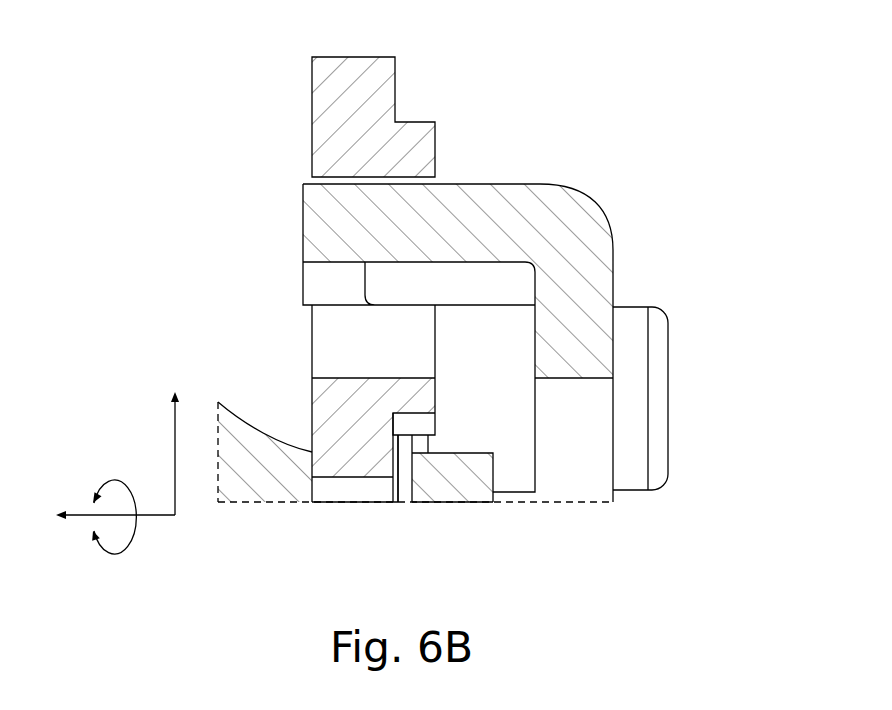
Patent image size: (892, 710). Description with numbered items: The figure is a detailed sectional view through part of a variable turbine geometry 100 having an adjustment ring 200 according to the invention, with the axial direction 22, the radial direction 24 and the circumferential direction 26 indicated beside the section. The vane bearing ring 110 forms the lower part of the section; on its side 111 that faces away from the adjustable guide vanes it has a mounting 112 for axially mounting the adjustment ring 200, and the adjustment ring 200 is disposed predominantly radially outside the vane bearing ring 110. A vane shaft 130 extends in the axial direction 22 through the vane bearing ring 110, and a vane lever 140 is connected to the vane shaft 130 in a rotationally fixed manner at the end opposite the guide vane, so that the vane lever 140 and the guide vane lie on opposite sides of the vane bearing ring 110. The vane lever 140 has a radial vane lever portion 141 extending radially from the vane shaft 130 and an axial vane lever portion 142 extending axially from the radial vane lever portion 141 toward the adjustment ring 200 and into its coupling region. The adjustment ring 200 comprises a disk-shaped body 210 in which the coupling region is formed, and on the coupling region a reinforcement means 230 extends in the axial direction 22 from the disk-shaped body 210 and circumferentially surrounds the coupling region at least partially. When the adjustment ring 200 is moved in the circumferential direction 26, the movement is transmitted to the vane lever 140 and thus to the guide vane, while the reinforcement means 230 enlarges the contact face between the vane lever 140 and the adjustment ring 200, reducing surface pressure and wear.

The variable turbine geometry 100 is at (620, 170).
The vane bearing ring 110 is at (465, 490).
The side of the vane bearing ring 111 is at (242, 478).
The mounting 112 is at (365, 519).
The vane shaft 130 is at (625, 403).
The vane lever 140 is at (644, 230).
The radial vane lever portion 141 is at (593, 265).
The axial vane lever portion 142 is at (498, 197).
The adjustment ring 200 is at (302, 177).
The disk-shaped body 210 is at (333, 105).
The reinforcement means 230 is at (436, 135).
The axial direction 22 is at (109, 503).
The radial direction 24 is at (158, 449).
The circumferential direction 26 is at (139, 517).